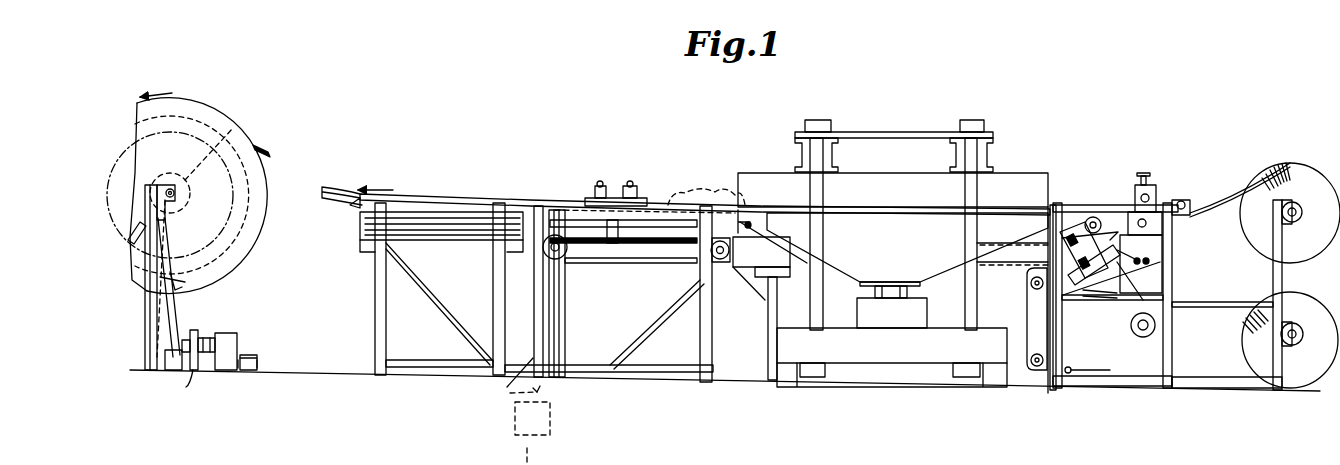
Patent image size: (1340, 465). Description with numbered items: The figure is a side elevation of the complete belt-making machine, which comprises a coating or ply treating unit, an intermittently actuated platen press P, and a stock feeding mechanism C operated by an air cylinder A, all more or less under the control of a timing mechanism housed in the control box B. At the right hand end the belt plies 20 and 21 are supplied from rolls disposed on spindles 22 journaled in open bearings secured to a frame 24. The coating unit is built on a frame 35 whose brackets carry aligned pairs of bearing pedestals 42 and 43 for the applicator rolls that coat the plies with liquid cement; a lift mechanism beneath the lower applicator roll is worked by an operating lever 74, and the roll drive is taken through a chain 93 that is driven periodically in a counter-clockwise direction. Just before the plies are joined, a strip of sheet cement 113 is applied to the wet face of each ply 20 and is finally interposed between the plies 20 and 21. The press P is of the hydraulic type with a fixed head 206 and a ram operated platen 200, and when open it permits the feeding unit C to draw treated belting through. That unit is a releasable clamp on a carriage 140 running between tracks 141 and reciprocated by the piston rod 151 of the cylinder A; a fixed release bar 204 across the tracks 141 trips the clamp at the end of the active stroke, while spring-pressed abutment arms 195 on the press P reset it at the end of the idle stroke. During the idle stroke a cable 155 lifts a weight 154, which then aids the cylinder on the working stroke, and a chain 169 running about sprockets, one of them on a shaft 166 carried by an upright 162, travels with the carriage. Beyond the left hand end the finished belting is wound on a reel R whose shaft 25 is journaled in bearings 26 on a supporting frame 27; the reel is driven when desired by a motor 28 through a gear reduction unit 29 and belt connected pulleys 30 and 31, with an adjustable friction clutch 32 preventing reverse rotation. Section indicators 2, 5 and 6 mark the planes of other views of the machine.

The reel R is at (208, 115).
The pulley 31 is at (230, 135).
The shaft 25 is at (180, 192).
The bearings 26 is at (182, 204).
The supporting frame 27 is at (155, 306).
The pulley 30 is at (150, 370).
The gear reduction unit 29 is at (237, 340).
The motor 28 is at (257, 362).
The adjustable friction clutch 32 is at (201, 384).
The air cylinder A is at (458, 243).
The section line 6 is at (533, 153).
The piston rod 151 is at (558, 210).
The stock feeding mechanism C is at (574, 190).
The fixed release bar 204 is at (590, 198).
The carriage 140 is at (612, 184).
The tracks 141 is at (667, 210).
The spring-pressed abutment arms 195 is at (738, 210).
The upright 162 is at (565, 293).
The chain 169 is at (648, 263).
The shaft 166 is at (725, 262).
The control box B is at (770, 301).
The cable 155 is at (508, 381).
The weight 154 is at (550, 423).
The platen press P is at (893, 132).
The fixed head 206 is at (893, 190).
The ram operated platen 200 is at (907, 247).
The chain 93 is at (1010, 263).
The belt plies 20 is at (1032, 314).
The section line 2 is at (1113, 140).
The frame 35 is at (1057, 388).
The section line 5 is at (1100, 188).
The bearing pedestals 42 is at (1078, 225).
The bearing pedestals 43 is at (1135, 173).
The operating lever 74 is at (1148, 260).
The sheet cement 113 is at (1140, 336).
The belt plies 21 is at (1237, 182).
The frame 24 is at (1273, 276).
The spindles 22 is at (1297, 200).